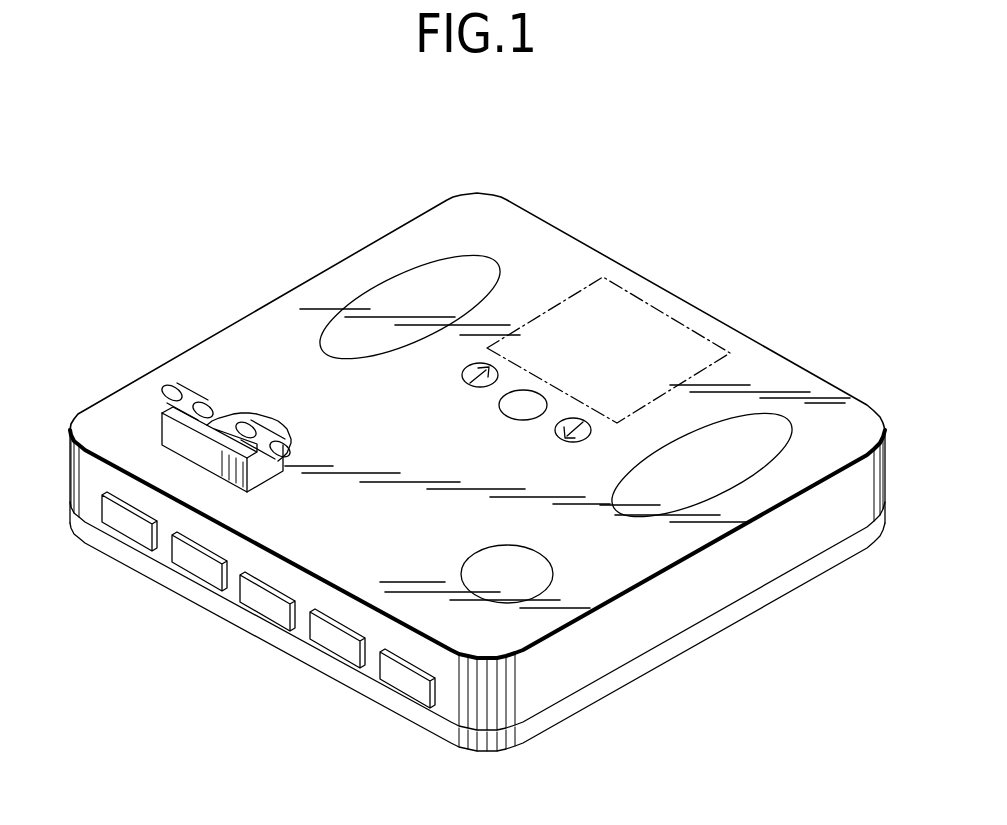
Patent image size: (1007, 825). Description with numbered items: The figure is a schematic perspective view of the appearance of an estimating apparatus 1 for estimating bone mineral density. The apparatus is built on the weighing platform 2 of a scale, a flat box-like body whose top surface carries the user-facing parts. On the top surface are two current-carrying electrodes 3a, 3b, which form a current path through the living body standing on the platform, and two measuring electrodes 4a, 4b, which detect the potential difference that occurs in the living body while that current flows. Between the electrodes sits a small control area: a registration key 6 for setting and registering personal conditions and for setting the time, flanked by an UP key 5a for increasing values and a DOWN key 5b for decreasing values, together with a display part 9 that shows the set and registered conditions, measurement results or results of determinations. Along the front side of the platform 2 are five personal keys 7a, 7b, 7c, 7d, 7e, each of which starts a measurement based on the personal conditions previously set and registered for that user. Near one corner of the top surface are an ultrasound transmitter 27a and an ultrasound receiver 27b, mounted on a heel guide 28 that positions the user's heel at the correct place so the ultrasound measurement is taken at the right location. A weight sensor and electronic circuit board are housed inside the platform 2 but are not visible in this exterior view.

The estimating apparatus 1 is at (741, 236).
The weighing platform 2 is at (650, 560).
The current-carrying electrode 3a is at (382, 297).
The current-carrying electrode 3b is at (767, 423).
The measuring electrode 4a is at (263, 422).
The measuring electrode 4b is at (532, 578).
The UP key 5a is at (483, 363).
The DOWN key 5b is at (587, 425).
The registration key 6 is at (537, 400).
The personal key 7a is at (130, 525).
The personal key 7b is at (200, 567).
The personal key 7c is at (267, 603).
The personal key 7d is at (338, 645).
The personal key 7e is at (405, 685).
The display part 9 is at (690, 347).
The ultrasound transmitter 27a is at (200, 404).
The ultrasound receiver 27b is at (252, 432).
The heel guide 28 is at (168, 432).